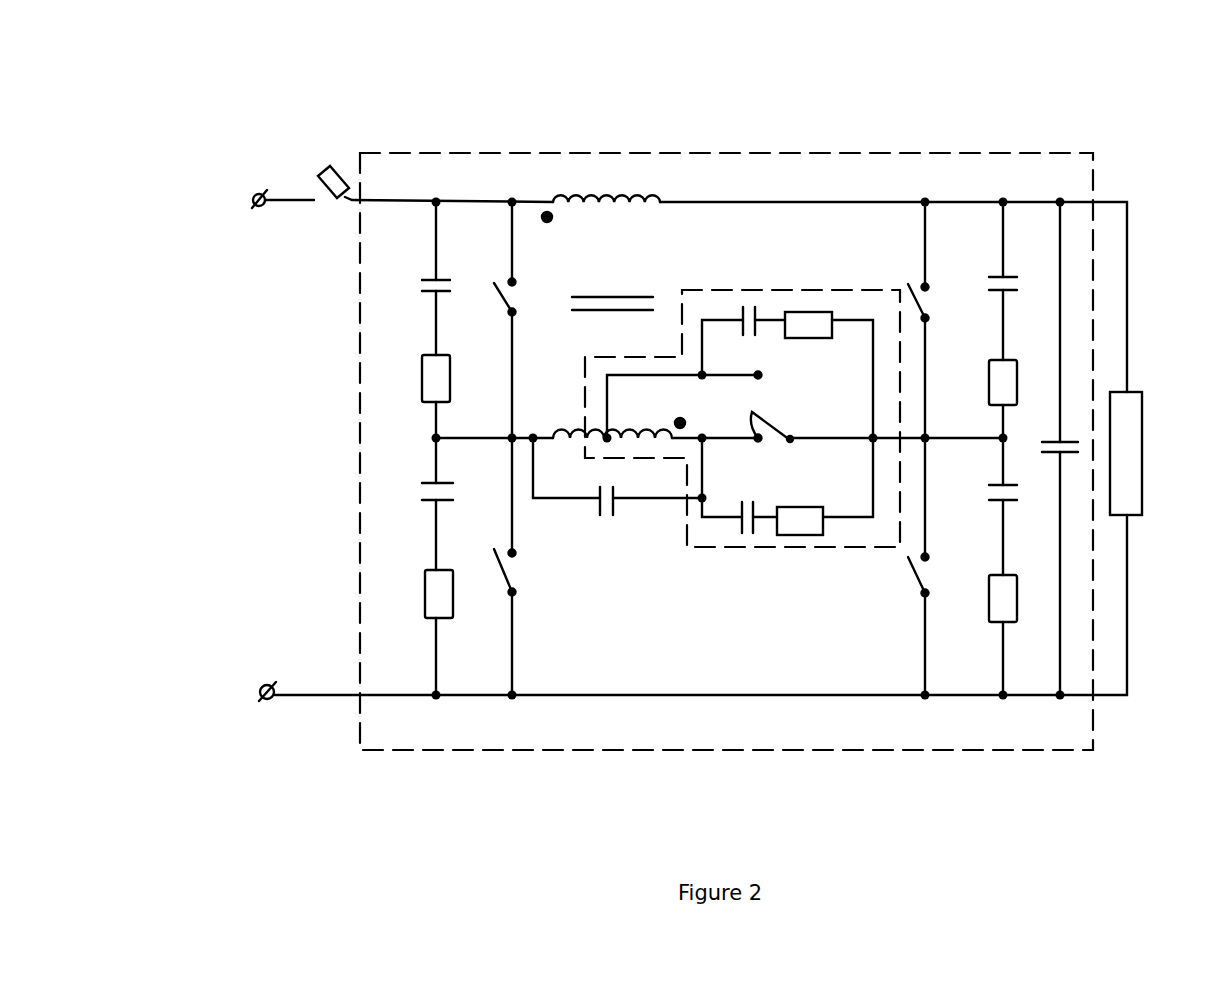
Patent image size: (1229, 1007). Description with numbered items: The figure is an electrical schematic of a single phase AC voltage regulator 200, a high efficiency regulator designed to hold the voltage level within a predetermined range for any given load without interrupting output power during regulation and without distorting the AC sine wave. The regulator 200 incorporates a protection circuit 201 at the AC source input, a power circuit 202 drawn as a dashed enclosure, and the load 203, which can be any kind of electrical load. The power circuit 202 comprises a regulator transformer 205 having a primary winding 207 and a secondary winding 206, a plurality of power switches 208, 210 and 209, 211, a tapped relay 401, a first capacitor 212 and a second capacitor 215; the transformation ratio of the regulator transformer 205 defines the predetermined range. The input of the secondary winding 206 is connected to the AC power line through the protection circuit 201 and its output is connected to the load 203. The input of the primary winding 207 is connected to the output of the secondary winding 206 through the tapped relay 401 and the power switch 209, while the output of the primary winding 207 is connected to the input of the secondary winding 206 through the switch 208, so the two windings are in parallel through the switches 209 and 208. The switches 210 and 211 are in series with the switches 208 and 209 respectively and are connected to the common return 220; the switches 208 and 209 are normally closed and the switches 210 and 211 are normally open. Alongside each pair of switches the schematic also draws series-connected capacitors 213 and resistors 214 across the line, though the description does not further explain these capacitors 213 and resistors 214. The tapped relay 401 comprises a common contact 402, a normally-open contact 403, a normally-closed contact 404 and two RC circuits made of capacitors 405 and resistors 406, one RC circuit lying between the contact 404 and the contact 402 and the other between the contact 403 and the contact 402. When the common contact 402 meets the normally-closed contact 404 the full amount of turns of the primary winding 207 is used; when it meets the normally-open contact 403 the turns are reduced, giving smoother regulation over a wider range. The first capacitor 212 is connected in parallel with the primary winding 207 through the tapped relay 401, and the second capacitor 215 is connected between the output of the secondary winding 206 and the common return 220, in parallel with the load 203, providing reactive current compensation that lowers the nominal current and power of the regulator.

The AC voltage regulator 200 is at (703, 400).
The protection circuit 201 is at (343, 168).
The power circuit 202 is at (968, 138).
The load 203 is at (1148, 437).
The regulator transformer 205 is at (607, 290).
The secondary winding 206 is at (628, 187).
The primary winding 207 is at (568, 427).
The power switch 208 is at (492, 283).
The power switch 209 is at (902, 287).
The power switch 210 is at (495, 590).
The power switch 211 is at (910, 592).
The first capacitor 212 is at (600, 522).
The capacitor 213 is at (415, 280).
The resistor 214 is at (415, 373).
The second capacitor 215 is at (1037, 445).
The common return 220 is at (290, 687).
The tapped relay 401 is at (742, 436).
The common contact 402 is at (790, 440).
The normally-open contact 403 is at (765, 368).
The normally-closed contact 404 is at (752, 445).
The capacitor 405 is at (738, 300).
The resistor 406 is at (802, 310).